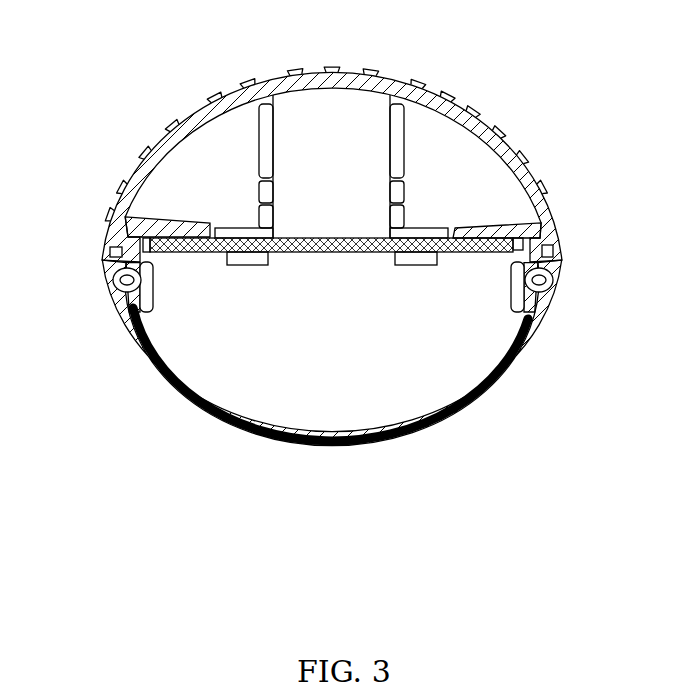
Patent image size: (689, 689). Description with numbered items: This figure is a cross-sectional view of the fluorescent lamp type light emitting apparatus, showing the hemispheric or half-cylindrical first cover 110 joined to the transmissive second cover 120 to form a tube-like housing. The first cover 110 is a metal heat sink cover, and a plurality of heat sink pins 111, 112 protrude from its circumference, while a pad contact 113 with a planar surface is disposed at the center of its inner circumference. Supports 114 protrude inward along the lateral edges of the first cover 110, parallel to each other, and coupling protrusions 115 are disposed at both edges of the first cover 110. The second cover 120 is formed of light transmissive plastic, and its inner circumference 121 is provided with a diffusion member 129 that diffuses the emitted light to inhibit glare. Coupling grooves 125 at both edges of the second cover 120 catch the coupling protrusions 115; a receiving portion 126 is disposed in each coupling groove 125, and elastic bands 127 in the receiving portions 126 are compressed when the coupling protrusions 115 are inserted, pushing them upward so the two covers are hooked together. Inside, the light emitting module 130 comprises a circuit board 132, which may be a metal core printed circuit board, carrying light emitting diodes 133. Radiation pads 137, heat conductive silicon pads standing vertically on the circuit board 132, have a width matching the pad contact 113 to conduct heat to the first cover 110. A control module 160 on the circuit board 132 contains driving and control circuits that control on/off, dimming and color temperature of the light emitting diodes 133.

The first cover 110 is at (337, 145).
The heat sink pin 111 is at (418, 86).
The heat sink pin 112 is at (231, 104).
The pad contact 113 is at (324, 92).
The support 114 is at (171, 226).
The coupling protrusion 115 is at (108, 252).
The second cover 120 is at (339, 397).
The inner circumference 121 is at (382, 448).
The coupling groove 125 is at (556, 252).
The receiving portion 126 is at (113, 284).
The elastic band 127 is at (128, 298).
The diffusion member 129 is at (314, 447).
The light emitting module 130 is at (350, 384).
The circuit board 132 is at (478, 253).
The light emitting diode 133 is at (420, 266).
The radiation pad 137 is at (381, 147).
The control module 160 is at (438, 232).